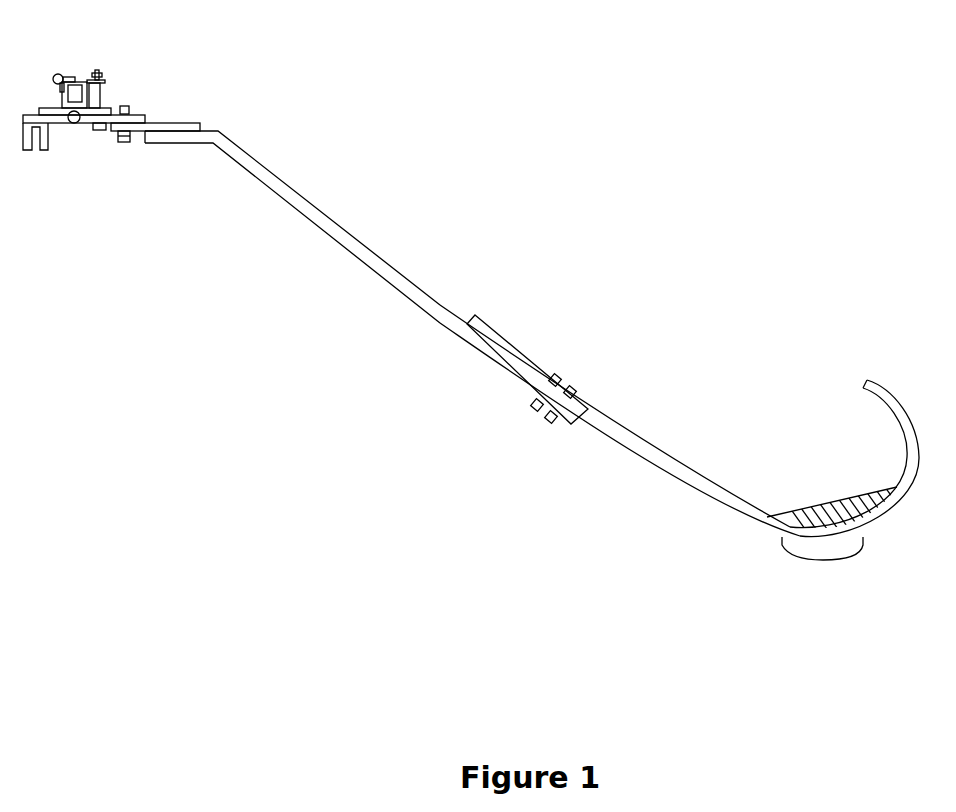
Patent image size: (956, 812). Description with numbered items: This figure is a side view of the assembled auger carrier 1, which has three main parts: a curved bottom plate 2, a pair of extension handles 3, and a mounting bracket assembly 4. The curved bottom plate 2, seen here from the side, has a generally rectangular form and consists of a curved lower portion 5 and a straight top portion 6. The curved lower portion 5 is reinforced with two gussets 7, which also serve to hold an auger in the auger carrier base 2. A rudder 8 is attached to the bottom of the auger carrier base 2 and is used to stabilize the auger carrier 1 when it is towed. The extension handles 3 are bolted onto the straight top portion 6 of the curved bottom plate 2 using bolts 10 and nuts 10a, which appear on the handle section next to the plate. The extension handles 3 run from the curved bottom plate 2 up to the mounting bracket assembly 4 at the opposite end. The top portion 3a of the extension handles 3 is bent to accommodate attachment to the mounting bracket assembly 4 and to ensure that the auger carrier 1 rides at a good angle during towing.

The auger carrier 1 is at (614, 550).
The curved bottom plate 2 is at (754, 541).
The extension handles 3 is at (365, 233).
The top portion of the extension handles 3a is at (188, 147).
The mounting bracket assembly 4 is at (124, 75).
The curved lower portion 5 is at (893, 428).
The straight top portion 6 is at (673, 455).
The gussets 7 is at (795, 500).
The rudder 8 is at (827, 560).
The bolts 10 is at (552, 377).
The nuts 10a is at (532, 409).